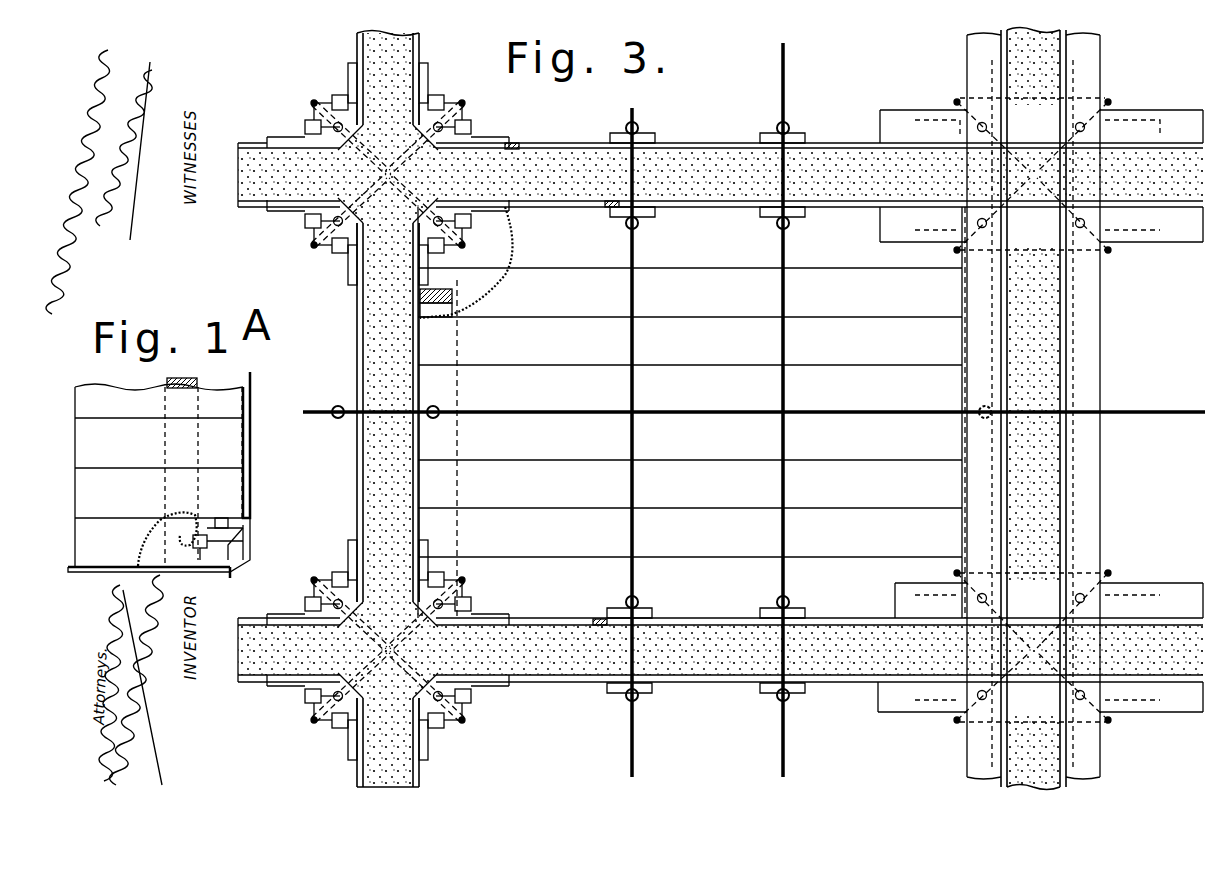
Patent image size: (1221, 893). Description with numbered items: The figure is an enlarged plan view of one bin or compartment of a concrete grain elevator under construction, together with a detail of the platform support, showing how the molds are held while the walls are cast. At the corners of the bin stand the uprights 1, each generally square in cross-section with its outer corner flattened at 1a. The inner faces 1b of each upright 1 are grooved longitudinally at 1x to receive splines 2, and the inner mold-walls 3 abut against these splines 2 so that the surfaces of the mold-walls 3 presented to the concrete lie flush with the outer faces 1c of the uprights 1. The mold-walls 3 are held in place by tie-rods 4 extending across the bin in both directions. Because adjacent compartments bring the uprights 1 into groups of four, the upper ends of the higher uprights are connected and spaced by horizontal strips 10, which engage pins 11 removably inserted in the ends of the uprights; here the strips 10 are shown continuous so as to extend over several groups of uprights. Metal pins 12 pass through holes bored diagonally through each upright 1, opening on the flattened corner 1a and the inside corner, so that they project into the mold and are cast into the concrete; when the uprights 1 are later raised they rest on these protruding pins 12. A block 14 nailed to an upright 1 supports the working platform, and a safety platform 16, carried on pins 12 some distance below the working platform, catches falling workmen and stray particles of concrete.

In FIG. 3, the upright 1 is at (425, 115).
In FIG. 1A, the upright 1 is at (221, 544).
In FIG. 3, the flattened outer corner 1a is at (380, 150).
In FIG. 1A, the flattened outer corner 1a is at (250, 545).
In FIG. 3, the inner face 1b is at (455, 97).
In FIG. 1A, the inner face 1b is at (250, 522).
In FIG. 3, the outer face 1c is at (390, 110).
In FIG. 1A, the outer face 1c is at (250, 532).
In FIG. 3, the groove 1x is at (455, 125).
In FIG. 1A, the groove 1x is at (232, 560).
In FIG. 3, the spline 2 is at (305, 126).
In FIG. 1A, the spline 2 is at (203, 535).
In FIG. 3, the inner mold-wall 3 is at (372, 40).
In FIG. 1A, the inner mold-wall 3 is at (138, 565).
In FIG. 3, the tie-rod 4 is at (636, 127).
In FIG. 3, the horizontal strip 10 is at (925, 110).
In FIG. 3, the pin 11 is at (336, 123).
In FIG. 3, the metal pin 12 is at (312, 102).
In FIG. 1A, the block 14 is at (165, 520).
In FIG. 3, the safety platform 16 is at (455, 302).
In FIG. 1A, the safety platform 16 is at (159, 472).